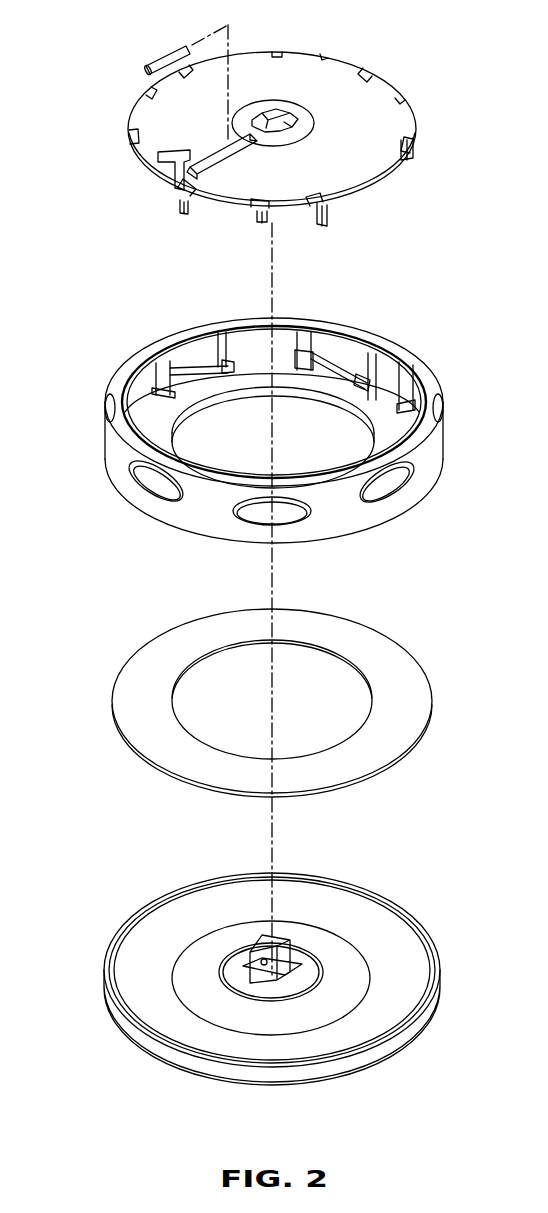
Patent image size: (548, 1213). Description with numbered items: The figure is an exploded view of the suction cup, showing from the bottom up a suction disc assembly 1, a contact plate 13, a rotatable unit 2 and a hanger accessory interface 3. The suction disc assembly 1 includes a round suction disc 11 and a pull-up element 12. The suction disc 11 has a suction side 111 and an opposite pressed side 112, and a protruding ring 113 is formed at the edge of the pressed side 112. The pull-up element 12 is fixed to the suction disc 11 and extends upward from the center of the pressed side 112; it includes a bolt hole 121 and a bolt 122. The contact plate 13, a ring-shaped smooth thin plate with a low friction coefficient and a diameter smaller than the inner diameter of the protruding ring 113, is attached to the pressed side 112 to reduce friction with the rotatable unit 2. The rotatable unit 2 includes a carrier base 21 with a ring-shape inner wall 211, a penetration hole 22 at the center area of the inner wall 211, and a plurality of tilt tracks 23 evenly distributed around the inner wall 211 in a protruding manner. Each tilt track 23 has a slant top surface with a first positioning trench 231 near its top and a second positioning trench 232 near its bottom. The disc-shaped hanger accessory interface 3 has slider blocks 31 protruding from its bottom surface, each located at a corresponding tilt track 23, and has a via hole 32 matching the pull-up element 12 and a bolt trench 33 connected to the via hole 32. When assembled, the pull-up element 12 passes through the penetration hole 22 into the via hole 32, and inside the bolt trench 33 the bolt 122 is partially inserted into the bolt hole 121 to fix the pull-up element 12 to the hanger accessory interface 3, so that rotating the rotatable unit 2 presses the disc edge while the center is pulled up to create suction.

The suction disc assembly 1 is at (430, 1110).
The suction disc 11 is at (231, 989).
The suction side 111 is at (142, 1052).
The pressed side 112 is at (143, 995).
The protruding ring 113 is at (107, 963).
The pull-up element 12 is at (290, 949).
The bolt hole 121 is at (257, 963).
The bolt 122 is at (170, 50).
The contact plate 13 is at (180, 635).
The rotatable unit 2 is at (423, 275).
The carrier base 21 is at (264, 430).
The ring-shape inner wall 211 is at (157, 443).
The penetration hole 22 is at (357, 433).
The tilt tracks 23 is at (254, 407).
The first positioning trench 231 is at (155, 352).
The second positioning trench 232 is at (218, 362).
The hanger accessory interface 3 is at (357, 88).
The slider blocks 31 is at (180, 211).
The via hole 32 is at (262, 118).
The bolt trench 33 is at (153, 170).